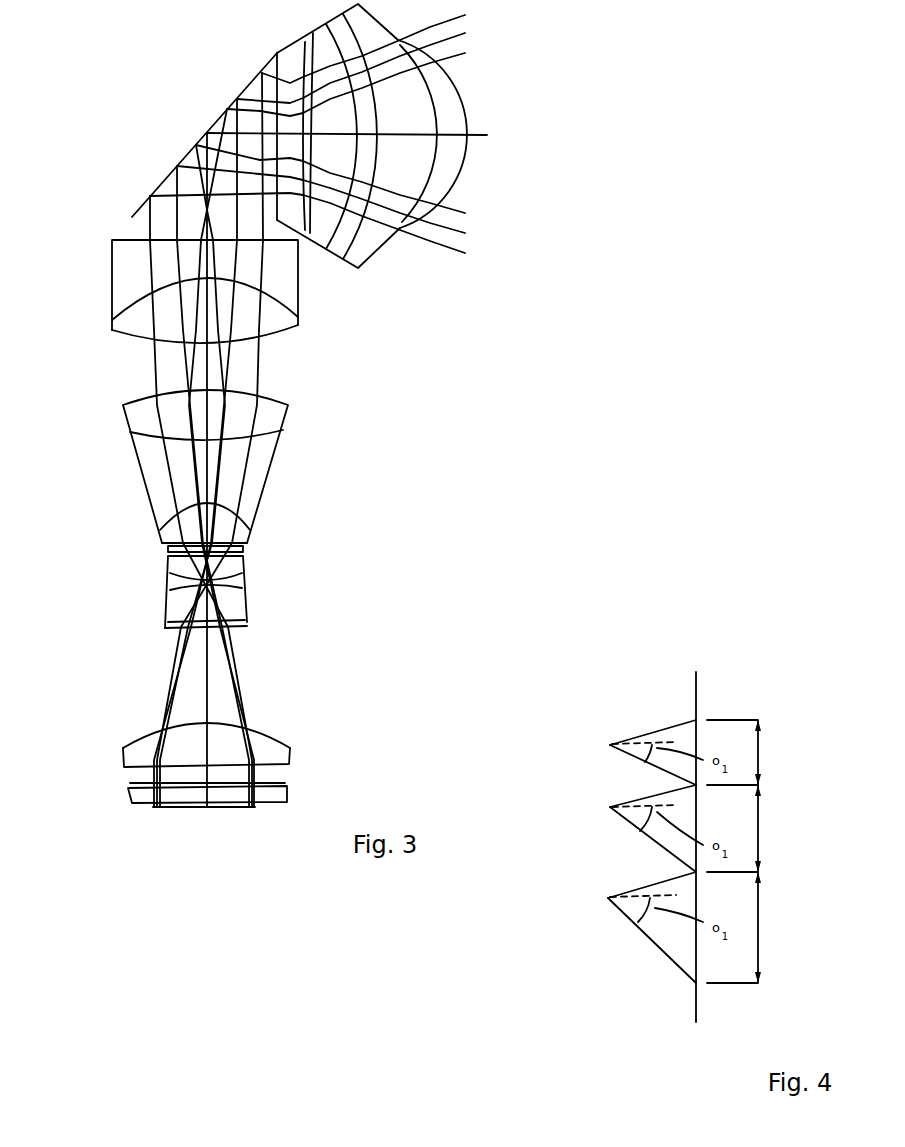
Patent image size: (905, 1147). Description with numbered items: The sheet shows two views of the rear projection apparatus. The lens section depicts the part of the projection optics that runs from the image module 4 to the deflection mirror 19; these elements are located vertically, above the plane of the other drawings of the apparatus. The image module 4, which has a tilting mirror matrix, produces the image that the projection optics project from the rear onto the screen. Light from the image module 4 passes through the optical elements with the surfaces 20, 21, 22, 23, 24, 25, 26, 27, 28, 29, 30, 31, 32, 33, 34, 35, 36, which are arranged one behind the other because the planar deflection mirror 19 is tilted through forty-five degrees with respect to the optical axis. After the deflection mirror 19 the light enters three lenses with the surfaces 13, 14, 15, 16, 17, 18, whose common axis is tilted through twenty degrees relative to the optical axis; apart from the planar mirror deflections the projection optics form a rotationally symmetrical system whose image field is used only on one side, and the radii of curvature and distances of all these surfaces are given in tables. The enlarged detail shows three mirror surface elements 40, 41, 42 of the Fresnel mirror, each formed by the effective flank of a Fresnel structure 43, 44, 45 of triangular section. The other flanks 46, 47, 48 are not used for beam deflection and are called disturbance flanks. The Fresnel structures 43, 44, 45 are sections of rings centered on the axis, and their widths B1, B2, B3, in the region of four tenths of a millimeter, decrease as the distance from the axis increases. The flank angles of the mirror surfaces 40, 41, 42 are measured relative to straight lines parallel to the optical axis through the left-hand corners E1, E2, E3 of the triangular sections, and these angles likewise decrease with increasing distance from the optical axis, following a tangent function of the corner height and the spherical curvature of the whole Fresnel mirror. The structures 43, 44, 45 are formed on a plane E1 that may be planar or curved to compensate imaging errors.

In FIG. 3, the image module 4 is at (228, 818).
In FIG. 3, the surface 13 is at (461, 103).
In FIG. 3, the surface 14 is at (412, 88).
In FIG. 3, the surface 15 is at (380, 138).
In FIG. 3, the surface 16 is at (349, 95).
In FIG. 3, the surface 17 is at (317, 145).
In FIG. 3, the surface 18 is at (301, 114).
In FIG. 3, the deflection mirror 19 is at (213, 127).
In FIG. 3, the surface 20 is at (130, 238).
In FIG. 3, the surface 21 is at (130, 302).
In FIG. 3, the surface 22 is at (130, 336).
In FIG. 3, the surface 23 is at (268, 393).
In FIG. 3, the surface 24 is at (143, 436).
In FIG. 3, the surface 25 is at (240, 518).
In FIG. 3, the surface 26 is at (233, 543).
In FIG. 3, the surface 27 is at (172, 548).
In FIG. 3, the surface 28 is at (243, 553).
In FIG. 3, the surface 29 is at (172, 573).
In FIG. 3, the surface 30 is at (243, 588).
In FIG. 3, the surface 31 is at (172, 632).
In FIG. 3, the surface 32 is at (267, 732).
In FIG. 3, the surface 33 is at (132, 770).
In FIG. 3, the surface 34 is at (283, 783).
In FIG. 3, the surface 35 is at (143, 808).
In FIG. 3, the surface 36 is at (187, 810).
In FIG. 4, the mirror surface element 40 is at (627, 918).
In FIG. 4, the mirror surface element 41 is at (625, 830).
In FIG. 4, the mirror surface element 42 is at (627, 757).
In FIG. 4, the Fresnel structure 43 is at (678, 958).
In FIG. 4, the Fresnel structure 44 is at (672, 848).
In FIG. 4, the Fresnel structure 45 is at (680, 727).
In FIG. 4, the disturbance flank 46 is at (627, 892).
In FIG. 4, the disturbance flank 47 is at (607, 805).
In FIG. 4, the disturbance flank 48 is at (627, 738).
In FIG. 4, the left-hand corner E1 is at (607, 898).
In FIG. 4, the left-hand corner E2 is at (608, 808).
In FIG. 4, the left-hand corner E3 is at (608, 745).
In FIG. 4, the width B1 is at (754, 927).
In FIG. 4, the width B2 is at (756, 828).
In FIG. 4, the width B3 is at (756, 752).